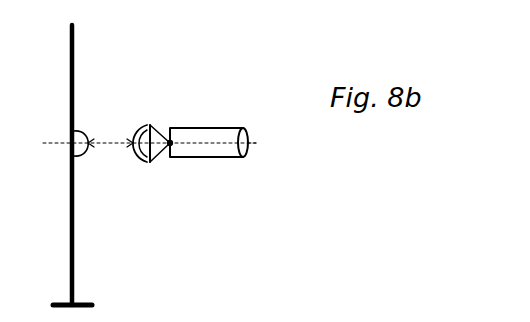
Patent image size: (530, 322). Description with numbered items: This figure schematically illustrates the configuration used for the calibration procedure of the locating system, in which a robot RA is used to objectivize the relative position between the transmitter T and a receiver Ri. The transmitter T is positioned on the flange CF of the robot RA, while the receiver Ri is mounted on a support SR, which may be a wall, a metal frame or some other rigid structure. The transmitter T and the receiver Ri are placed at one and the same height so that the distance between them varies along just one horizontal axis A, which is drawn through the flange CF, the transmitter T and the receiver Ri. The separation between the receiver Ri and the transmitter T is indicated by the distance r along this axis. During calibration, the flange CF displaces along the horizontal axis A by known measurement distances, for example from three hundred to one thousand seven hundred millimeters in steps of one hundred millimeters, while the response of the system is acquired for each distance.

The support SR is at (60, 164).
The receiver Ri is at (80, 157).
The distance between image region and camera front r is at (110, 126).
The flange CF is at (177, 128).
The transmitter T is at (149, 164).
The robot RA is at (204, 135).
The horizontal axis A is at (258, 131).